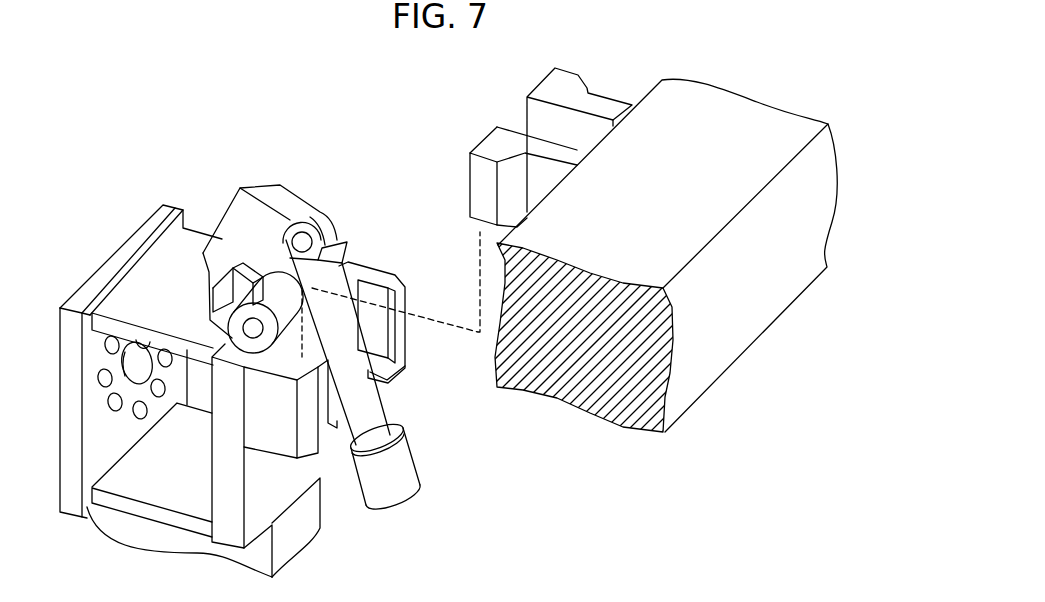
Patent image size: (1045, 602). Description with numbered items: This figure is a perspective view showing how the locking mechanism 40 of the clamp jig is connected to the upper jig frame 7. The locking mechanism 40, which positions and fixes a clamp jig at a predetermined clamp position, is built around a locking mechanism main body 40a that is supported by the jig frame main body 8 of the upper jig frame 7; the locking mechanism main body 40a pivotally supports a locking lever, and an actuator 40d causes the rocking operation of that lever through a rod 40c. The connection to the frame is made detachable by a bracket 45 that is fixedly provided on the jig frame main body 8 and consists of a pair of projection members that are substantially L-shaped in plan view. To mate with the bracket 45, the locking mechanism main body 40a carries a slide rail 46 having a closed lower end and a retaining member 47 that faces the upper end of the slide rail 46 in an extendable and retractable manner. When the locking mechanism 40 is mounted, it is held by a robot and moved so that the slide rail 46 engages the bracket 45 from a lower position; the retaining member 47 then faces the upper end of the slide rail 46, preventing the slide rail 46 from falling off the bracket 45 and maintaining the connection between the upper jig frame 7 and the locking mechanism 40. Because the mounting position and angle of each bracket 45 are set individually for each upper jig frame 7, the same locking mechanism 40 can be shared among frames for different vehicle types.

The upper jig frame 7 is at (758, 70).
The jig frame main body 8 is at (673, 88).
The bracket 45 is at (568, 83).
The locking mechanism 40 is at (360, 176).
The locking mechanism main body 40a is at (100, 280).
The rod 40c is at (367, 413).
The actuator 40d is at (222, 214).
The slide rail 46 is at (377, 275).
The retaining member 47 is at (225, 302).